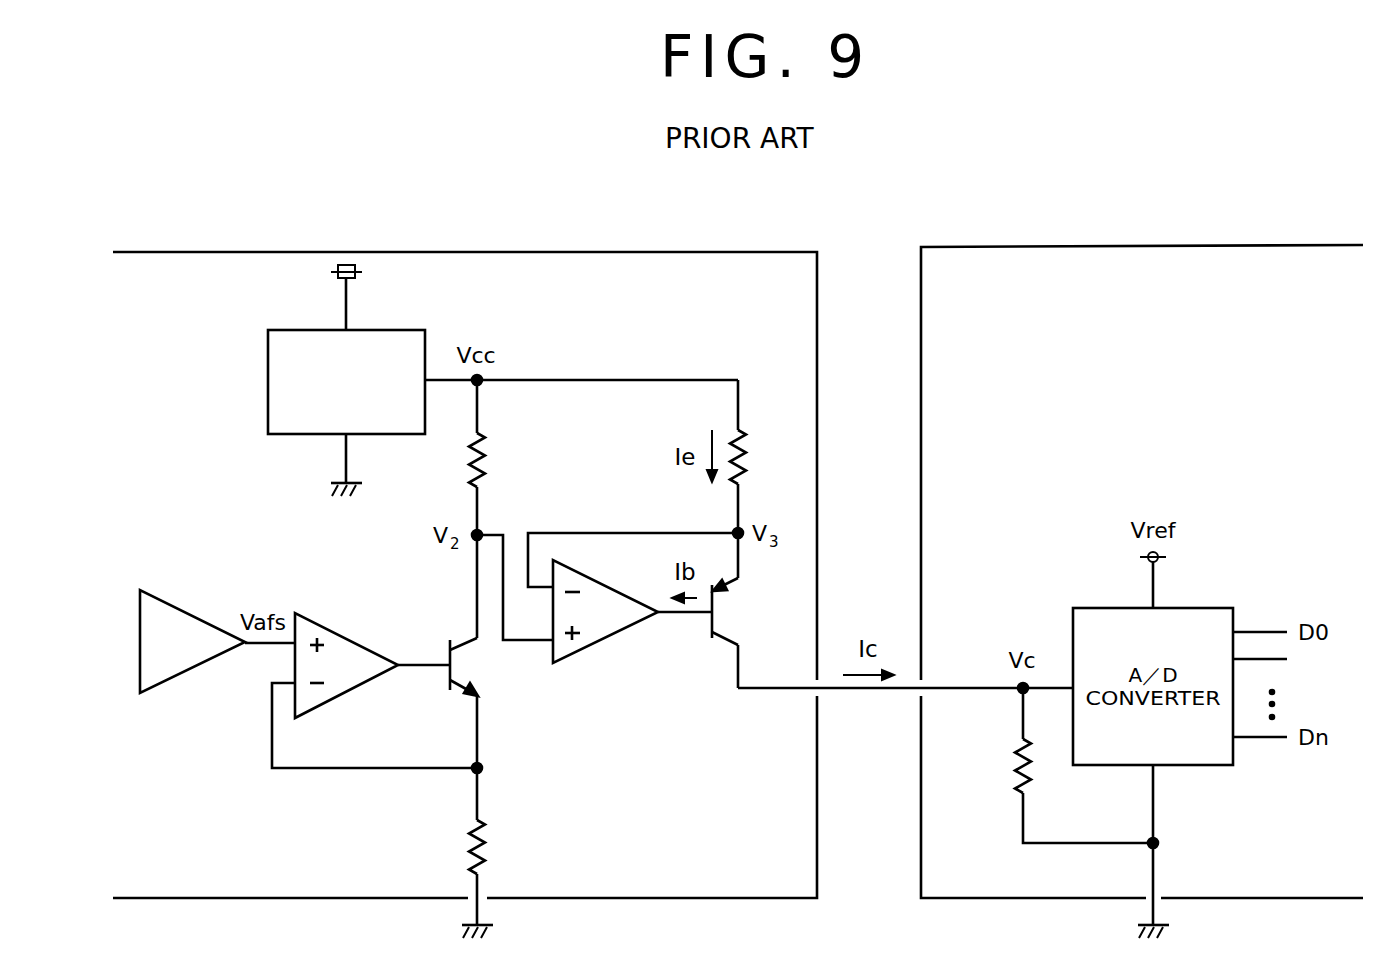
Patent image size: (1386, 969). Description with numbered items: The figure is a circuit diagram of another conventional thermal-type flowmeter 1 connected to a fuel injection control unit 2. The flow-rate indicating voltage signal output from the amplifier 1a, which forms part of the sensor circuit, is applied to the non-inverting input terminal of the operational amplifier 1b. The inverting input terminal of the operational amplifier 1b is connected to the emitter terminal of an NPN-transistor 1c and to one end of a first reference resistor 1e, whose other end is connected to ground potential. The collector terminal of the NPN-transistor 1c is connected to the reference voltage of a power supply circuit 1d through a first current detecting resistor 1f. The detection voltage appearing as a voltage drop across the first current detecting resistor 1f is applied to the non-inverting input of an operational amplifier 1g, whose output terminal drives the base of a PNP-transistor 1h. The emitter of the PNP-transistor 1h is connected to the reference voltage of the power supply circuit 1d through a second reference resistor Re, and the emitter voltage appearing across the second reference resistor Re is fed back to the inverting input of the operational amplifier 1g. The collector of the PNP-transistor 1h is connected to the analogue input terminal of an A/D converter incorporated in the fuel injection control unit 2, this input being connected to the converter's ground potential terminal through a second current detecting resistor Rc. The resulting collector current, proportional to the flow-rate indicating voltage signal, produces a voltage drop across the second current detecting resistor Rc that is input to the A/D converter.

The thermal-type flowmeter 1 is at (451, 252).
The fuel injection control unit 2 is at (1100, 246).
The amplifier 1a is at (200, 610).
The operational amplifier 1b is at (349, 632).
The NPN-transistor 1c is at (481, 666).
The power supply circuit 1d is at (399, 330).
The first reference resistor 1e is at (491, 849).
The first current detecting resistor 1f is at (495, 458).
The operational amplifier 1g is at (604, 642).
The PNP-transistor 1h is at (735, 612).
The second reference resistor Re is at (755, 458).
The second current detecting resistor Rc is at (1006, 765).